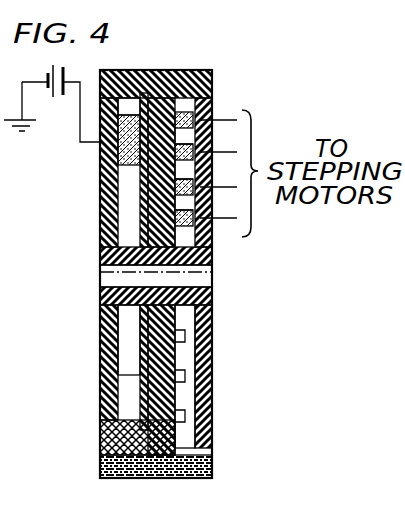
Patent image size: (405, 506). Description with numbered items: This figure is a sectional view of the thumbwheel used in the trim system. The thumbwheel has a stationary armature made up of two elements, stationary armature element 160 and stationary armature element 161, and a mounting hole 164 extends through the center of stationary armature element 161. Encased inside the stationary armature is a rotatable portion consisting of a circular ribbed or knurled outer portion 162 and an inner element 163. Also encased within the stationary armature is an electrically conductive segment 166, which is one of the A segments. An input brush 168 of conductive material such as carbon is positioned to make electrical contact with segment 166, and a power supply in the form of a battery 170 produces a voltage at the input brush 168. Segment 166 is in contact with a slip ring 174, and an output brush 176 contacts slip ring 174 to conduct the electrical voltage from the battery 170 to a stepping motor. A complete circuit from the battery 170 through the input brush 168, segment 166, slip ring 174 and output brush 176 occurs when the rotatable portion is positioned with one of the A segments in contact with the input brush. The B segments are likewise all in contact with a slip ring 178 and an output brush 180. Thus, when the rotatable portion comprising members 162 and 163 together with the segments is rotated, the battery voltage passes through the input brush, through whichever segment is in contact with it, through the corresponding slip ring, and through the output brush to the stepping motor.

The stationary armature element 160 is at (103, 227).
The stationary armature element 161 is at (200, 255).
The knurled outer portion 162 is at (198, 108).
The inner element 163 is at (100, 279).
The mounting hole 164 is at (214, 281).
The conductive segment 166 is at (118, 191).
The input brush 168 is at (118, 152).
The battery 170 is at (67, 63).
The slip ring 174 is at (178, 102).
The output brush 176 is at (206, 115).
The slip ring 178 is at (212, 122).
The output brush 180 is at (216, 126).